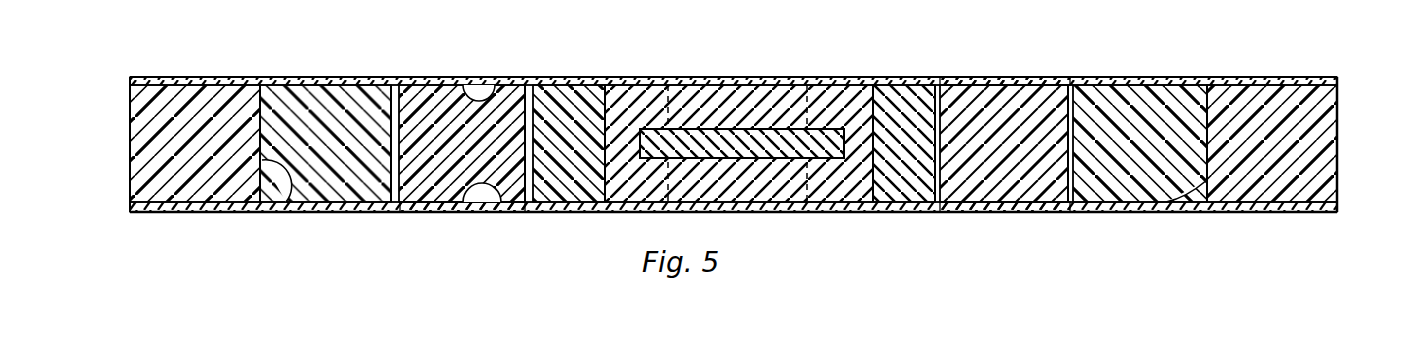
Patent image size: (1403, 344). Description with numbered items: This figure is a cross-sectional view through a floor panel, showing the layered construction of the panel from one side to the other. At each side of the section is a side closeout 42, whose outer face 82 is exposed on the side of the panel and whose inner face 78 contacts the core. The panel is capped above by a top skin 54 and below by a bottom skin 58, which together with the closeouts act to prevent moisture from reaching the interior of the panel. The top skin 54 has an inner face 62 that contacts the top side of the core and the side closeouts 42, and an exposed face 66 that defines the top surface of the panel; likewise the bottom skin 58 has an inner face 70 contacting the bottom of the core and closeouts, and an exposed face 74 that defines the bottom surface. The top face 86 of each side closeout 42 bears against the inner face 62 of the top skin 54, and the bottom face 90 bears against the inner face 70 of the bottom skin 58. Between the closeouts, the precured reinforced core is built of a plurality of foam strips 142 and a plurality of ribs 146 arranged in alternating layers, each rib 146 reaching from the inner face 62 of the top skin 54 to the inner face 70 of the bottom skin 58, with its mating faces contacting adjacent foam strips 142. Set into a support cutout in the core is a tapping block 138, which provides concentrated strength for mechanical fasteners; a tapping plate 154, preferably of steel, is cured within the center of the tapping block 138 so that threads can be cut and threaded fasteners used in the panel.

The side closeout 42 is at (168, 168).
The top skin 54 is at (1006, 77).
The bottom skin 58 is at (994, 212).
The inner face 62 is at (499, 84).
The exposed face 66 is at (447, 77).
The inner face 70 is at (500, 195).
The exposed face 74 is at (432, 212).
The inner face 78 is at (288, 200).
The outer face 82 is at (130, 143).
The top face 86 is at (204, 77).
The bottom face 90 is at (190, 212).
The tapping block 138 is at (838, 178).
The foam strip 142 is at (340, 102).
The rib 146 is at (394, 212).
The tapping plate 154 is at (711, 129).